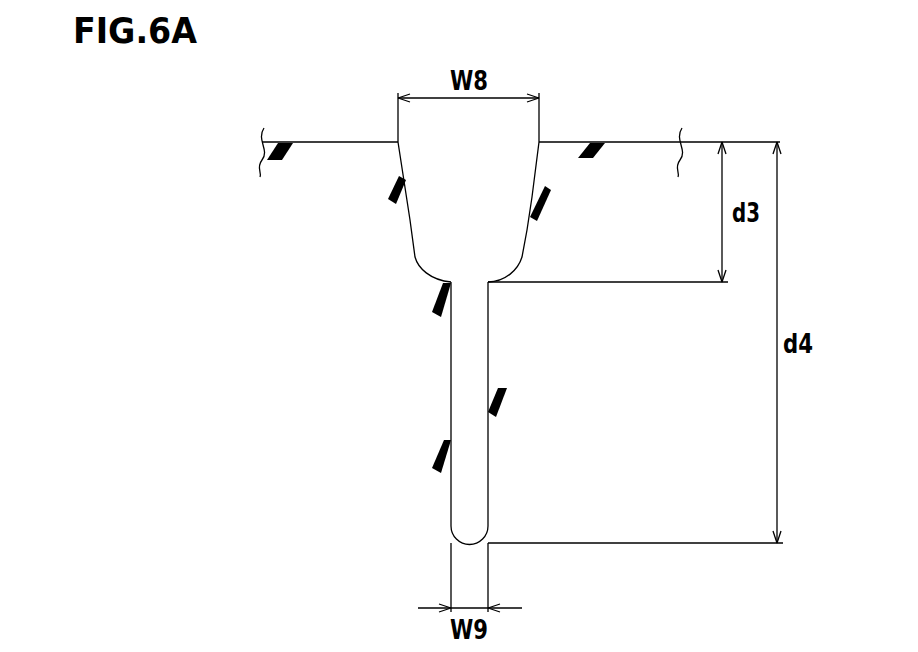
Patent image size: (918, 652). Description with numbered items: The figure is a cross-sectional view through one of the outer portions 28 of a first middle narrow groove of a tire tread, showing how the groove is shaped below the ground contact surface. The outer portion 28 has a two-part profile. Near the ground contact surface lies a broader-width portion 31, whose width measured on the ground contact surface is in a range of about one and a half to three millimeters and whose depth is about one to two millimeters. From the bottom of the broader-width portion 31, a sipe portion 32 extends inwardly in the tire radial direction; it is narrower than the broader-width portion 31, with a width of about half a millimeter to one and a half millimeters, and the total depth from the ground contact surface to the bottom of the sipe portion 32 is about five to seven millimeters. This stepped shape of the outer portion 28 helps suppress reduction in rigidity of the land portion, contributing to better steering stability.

The outer portion 28 is at (354, 343).
The broader-width portion 31 is at (440, 222).
The sipe portion 32 is at (470, 412).